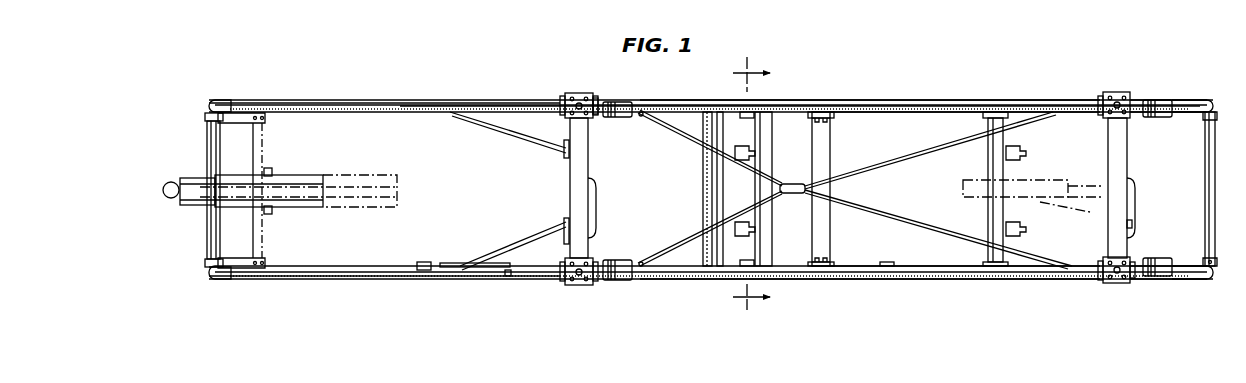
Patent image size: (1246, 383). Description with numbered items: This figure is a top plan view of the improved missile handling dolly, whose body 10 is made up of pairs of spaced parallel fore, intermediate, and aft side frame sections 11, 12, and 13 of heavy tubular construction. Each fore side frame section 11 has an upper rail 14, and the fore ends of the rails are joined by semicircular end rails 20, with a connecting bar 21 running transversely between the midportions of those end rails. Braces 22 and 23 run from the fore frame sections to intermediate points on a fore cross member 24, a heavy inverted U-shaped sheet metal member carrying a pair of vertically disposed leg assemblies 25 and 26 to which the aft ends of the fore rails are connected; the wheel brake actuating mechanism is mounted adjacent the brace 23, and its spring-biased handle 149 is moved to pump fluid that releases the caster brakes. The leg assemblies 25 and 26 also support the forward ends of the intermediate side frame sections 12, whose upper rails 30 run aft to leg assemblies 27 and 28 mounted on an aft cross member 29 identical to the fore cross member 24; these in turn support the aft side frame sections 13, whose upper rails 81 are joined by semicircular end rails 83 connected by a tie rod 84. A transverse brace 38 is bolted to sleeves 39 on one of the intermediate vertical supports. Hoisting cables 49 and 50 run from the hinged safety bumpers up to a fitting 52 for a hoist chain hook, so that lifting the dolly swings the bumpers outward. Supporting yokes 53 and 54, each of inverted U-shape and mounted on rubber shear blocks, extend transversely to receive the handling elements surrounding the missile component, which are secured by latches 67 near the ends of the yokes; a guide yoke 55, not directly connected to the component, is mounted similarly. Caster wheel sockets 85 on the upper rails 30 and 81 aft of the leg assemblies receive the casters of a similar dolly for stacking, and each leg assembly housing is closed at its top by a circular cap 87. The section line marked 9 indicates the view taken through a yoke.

The section line 9- 9 is at (743, 183).
The body 10 is at (645, 155).
The fore side frame sections 11 is at (390, 100).
The intermediate side frame sections 12 is at (851, 100).
The aft side frame sections 13 is at (1138, 98).
The upper rail 14 is at (319, 100).
The semicircular end rails 20 is at (228, 92).
The connecting bar 21 is at (207, 236).
The brace 22 is at (518, 138).
The brace 23 is at (522, 243).
The fore cross member 24 is at (566, 190).
The leg assembly 25 is at (574, 92).
The leg assembly 26 is at (579, 285).
The leg assembly 27 is at (1120, 92).
The leg assembly 28 is at (1118, 284).
The aft cross member 29 is at (1115, 164).
The upper rail 30 is at (912, 100).
The transverse brace 38 is at (832, 233).
The sleeves 39 is at (820, 99).
The hoisting cable 49 is at (694, 142).
The hoisting cable 50 is at (912, 158).
The fitting 52 is at (790, 183).
The supporting yoke 53 is at (700, 186).
The supporting yoke 54 is at (988, 216).
The guide yoke 55 is at (712, 253).
The latches 67 is at (740, 163).
The upper rail 81 is at (1175, 100).
The semicircular end rails 83 is at (1205, 278).
The tie rod 84 is at (1208, 212).
The caster wheel sockets 85 is at (618, 102).
The circular cap 87 is at (586, 96).
The handle 149 is at (400, 272).